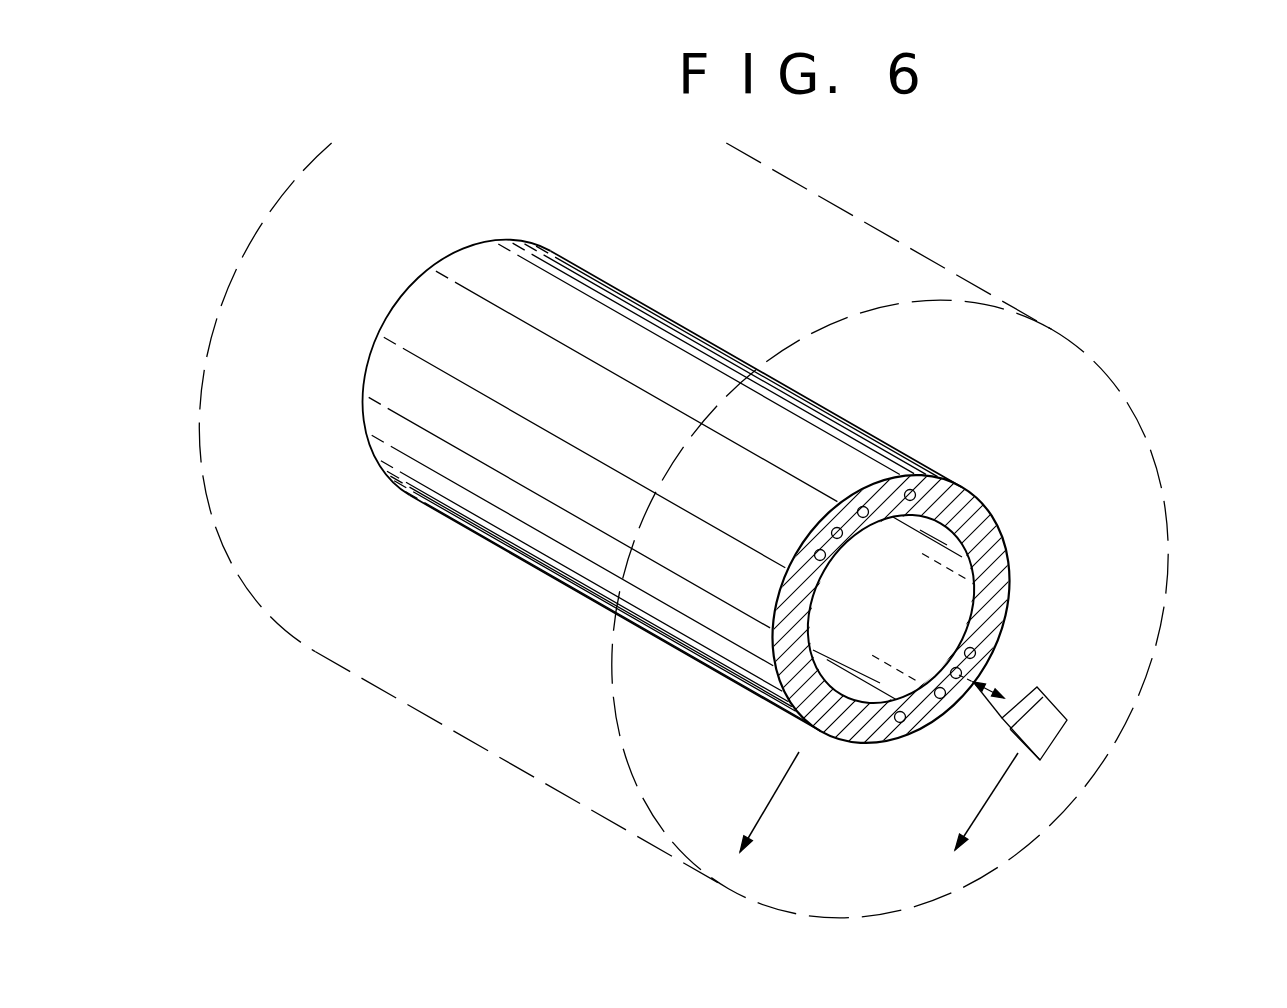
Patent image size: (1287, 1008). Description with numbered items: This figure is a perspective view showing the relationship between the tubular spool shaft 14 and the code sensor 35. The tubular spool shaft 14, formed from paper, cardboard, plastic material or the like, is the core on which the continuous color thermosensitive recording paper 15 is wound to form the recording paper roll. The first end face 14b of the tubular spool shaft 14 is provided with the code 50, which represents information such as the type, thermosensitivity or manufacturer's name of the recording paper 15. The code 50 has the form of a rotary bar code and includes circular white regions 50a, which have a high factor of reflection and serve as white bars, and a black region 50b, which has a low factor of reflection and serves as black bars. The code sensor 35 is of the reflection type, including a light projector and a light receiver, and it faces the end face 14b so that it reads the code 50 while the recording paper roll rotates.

The tubular spool shaft 14 is at (887, 442).
The first end face 14b is at (995, 562).
The color thermosensitive recording paper 15 is at (1162, 465).
The code sensor 35 is at (1047, 725).
The code 50 is at (895, 680).
The circular white regions 50a is at (905, 723).
The black region 50b is at (865, 728).